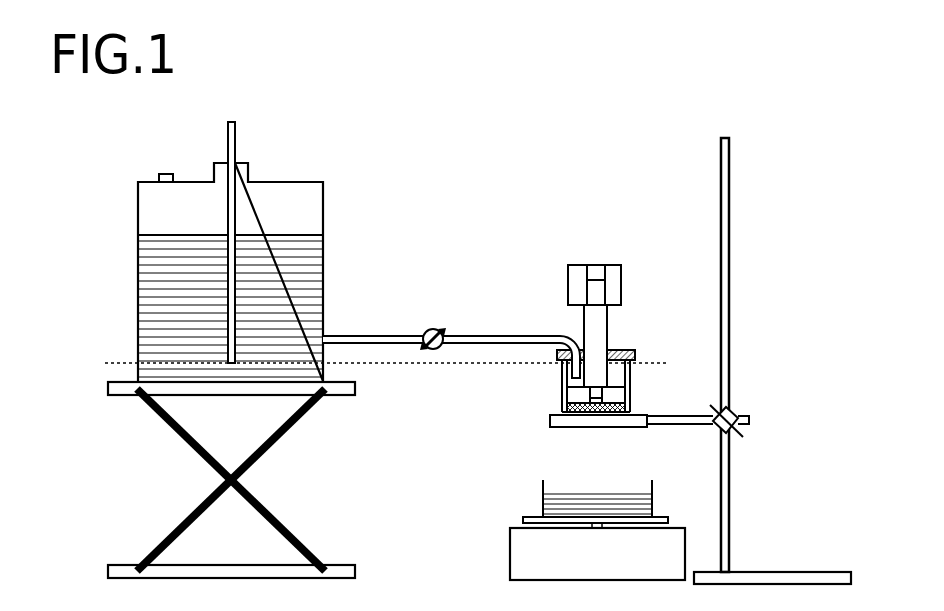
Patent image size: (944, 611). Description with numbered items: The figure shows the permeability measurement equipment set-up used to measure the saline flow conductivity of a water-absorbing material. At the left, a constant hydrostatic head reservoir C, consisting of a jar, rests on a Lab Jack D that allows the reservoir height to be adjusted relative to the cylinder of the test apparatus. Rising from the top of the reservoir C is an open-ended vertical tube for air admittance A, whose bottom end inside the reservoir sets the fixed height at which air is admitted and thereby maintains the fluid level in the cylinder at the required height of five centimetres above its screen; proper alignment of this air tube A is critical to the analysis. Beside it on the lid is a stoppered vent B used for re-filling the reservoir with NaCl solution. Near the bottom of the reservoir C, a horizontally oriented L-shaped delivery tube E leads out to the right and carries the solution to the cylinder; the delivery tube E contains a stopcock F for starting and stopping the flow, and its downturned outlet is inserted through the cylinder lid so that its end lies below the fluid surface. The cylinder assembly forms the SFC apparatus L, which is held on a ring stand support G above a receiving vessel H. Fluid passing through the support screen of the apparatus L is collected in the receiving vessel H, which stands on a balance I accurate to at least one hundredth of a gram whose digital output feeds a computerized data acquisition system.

The open-ended tube for air admittance A is at (232, 118).
The stoppered vent B is at (164, 172).
The constant hydrostatic head reservoir C is at (330, 270).
The Lab Jack D is at (157, 487).
The delivery tube E is at (408, 347).
The stopcock F is at (438, 325).
The ring stand support G is at (738, 260).
The receiving vessel H is at (537, 481).
The balance I is at (508, 569).
The SFC apparatus L is at (597, 259).